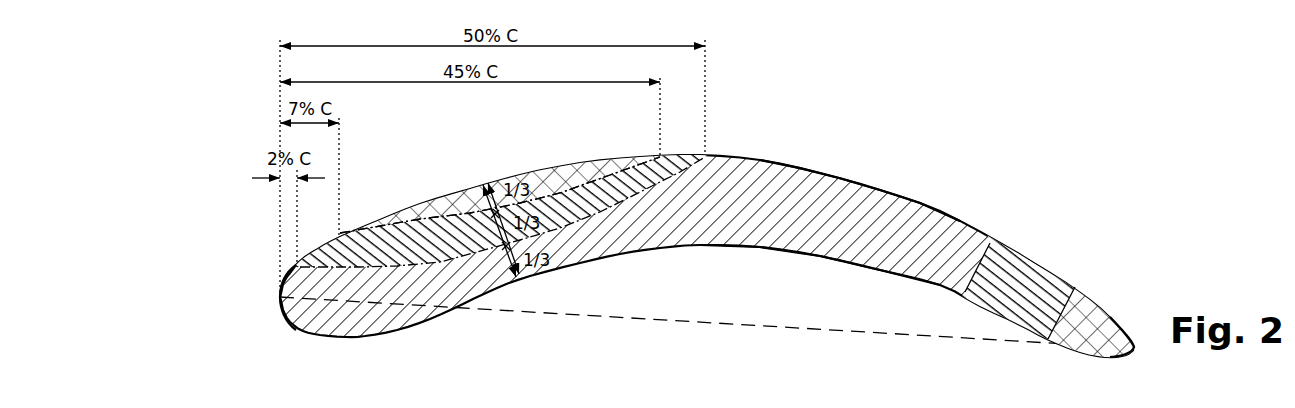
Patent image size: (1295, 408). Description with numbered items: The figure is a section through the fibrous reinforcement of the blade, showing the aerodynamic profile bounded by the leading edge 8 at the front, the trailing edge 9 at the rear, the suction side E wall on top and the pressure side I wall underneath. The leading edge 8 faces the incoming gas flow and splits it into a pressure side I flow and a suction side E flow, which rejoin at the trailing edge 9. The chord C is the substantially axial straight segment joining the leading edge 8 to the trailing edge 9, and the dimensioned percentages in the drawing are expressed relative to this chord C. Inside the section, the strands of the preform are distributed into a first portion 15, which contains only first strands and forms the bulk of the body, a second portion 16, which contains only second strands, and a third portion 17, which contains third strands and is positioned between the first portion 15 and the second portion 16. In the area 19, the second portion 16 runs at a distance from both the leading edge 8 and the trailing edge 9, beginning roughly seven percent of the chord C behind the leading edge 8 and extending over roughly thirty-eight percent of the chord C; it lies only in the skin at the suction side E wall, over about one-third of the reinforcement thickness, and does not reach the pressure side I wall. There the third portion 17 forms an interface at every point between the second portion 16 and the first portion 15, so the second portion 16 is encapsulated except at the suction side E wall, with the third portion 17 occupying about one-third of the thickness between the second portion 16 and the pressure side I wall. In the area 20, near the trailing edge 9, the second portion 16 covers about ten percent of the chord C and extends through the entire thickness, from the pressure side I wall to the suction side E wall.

The leading edge 8 is at (279, 298).
The trailing edge 9 is at (1139, 348).
The first portion 15 is at (348, 309).
The second portion 16 is at (472, 186).
The third portion 17 is at (334, 255).
The area 19 is at (457, 215).
The area 20 is at (1068, 315).
The chord C is at (706, 323).
The suction side wall E is at (863, 184).
The pressure side wall I is at (816, 257).